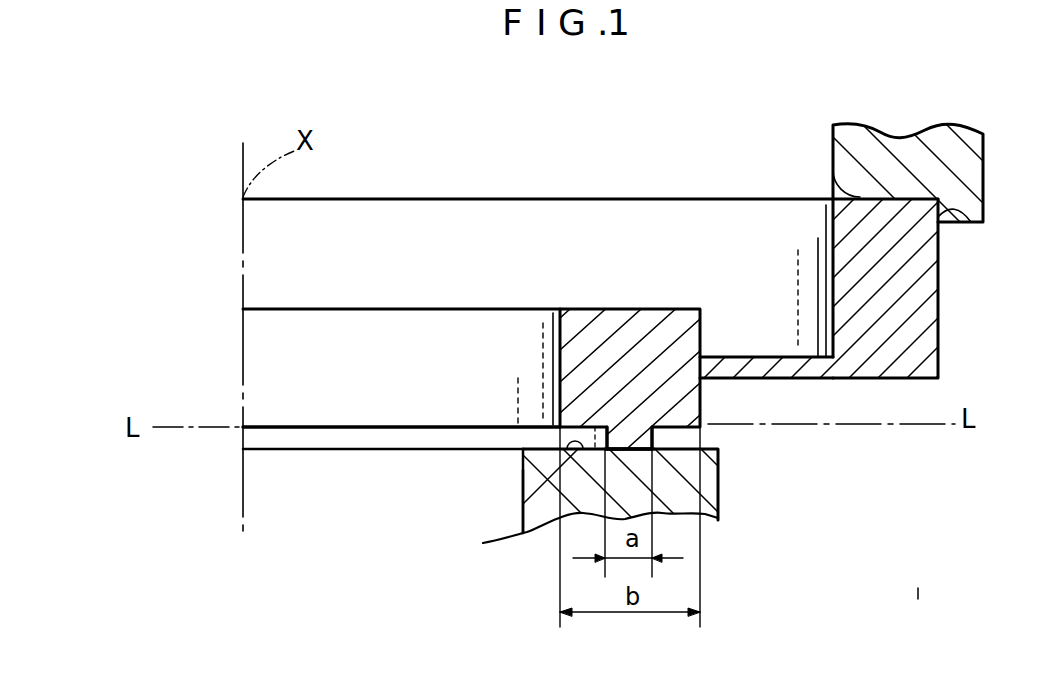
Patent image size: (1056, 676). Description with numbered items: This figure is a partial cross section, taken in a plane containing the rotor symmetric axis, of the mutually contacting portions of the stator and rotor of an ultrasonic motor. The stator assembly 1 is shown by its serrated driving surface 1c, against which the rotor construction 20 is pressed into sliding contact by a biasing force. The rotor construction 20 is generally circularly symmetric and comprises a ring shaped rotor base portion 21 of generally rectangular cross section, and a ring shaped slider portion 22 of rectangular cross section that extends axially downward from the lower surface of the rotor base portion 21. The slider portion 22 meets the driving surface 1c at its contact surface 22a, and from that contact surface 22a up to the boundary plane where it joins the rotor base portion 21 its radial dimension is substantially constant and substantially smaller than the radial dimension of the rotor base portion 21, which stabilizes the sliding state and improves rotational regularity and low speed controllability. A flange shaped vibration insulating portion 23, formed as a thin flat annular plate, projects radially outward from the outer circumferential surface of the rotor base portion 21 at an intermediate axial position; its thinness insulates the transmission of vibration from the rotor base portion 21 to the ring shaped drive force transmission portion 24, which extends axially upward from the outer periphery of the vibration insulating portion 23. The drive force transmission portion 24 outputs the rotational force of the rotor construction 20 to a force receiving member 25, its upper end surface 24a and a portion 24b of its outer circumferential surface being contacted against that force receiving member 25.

The stator assembly 1 is at (712, 507).
The driving surface 1c is at (523, 508).
The rotor construction 20 is at (665, 318).
The rotor base portion 21 is at (572, 370).
The slider portion 22 is at (658, 430).
The contact surface 22a is at (627, 448).
The vibration insulating portion 23 is at (780, 366).
The drive force transmission portion 24 is at (923, 331).
The upper end surface 24a is at (833, 163).
The portion of outer circumferential surface 24b is at (978, 226).
The force receiving member 25 is at (963, 163).